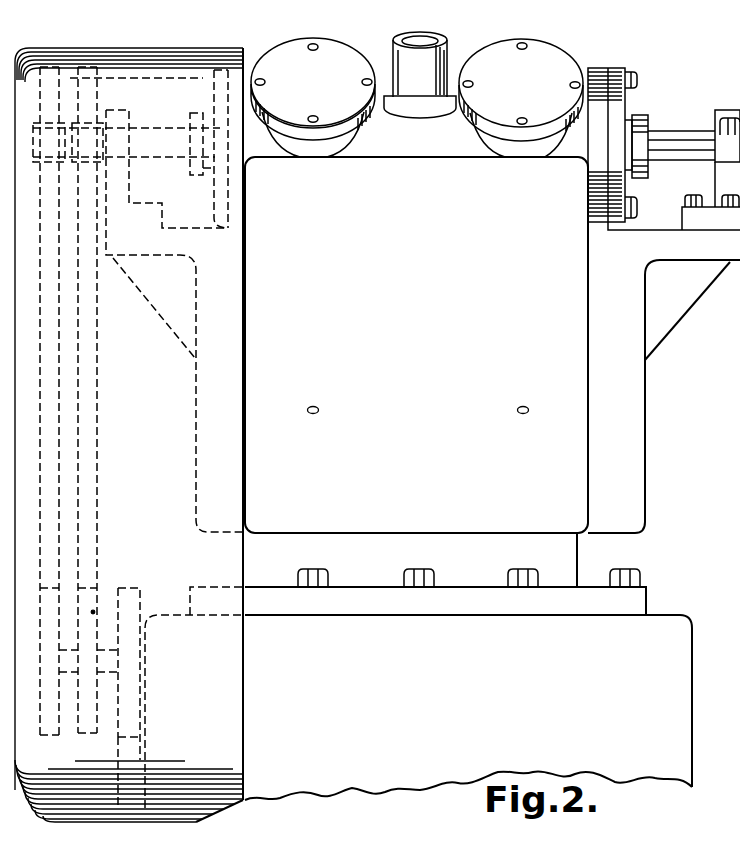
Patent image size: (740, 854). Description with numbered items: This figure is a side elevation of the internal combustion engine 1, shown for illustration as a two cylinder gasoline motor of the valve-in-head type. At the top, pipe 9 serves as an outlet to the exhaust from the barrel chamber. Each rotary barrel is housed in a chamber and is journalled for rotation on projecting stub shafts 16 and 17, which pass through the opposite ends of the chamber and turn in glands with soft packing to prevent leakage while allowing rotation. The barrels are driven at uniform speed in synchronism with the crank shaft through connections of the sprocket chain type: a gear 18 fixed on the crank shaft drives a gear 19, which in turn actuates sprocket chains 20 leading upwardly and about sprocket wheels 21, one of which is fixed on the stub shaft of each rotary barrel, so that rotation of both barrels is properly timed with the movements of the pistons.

The internal combustion engine 1 is at (638, 450).
The pipe 9 is at (420, 75).
The stub shaft 16 is at (676, 135).
The stub shaft 17 is at (162, 128).
The gear 18 is at (132, 737).
The gear 19 is at (135, 590).
The sprocket chains 20 is at (97, 373).
The sprocket wheels 21 is at (80, 217).